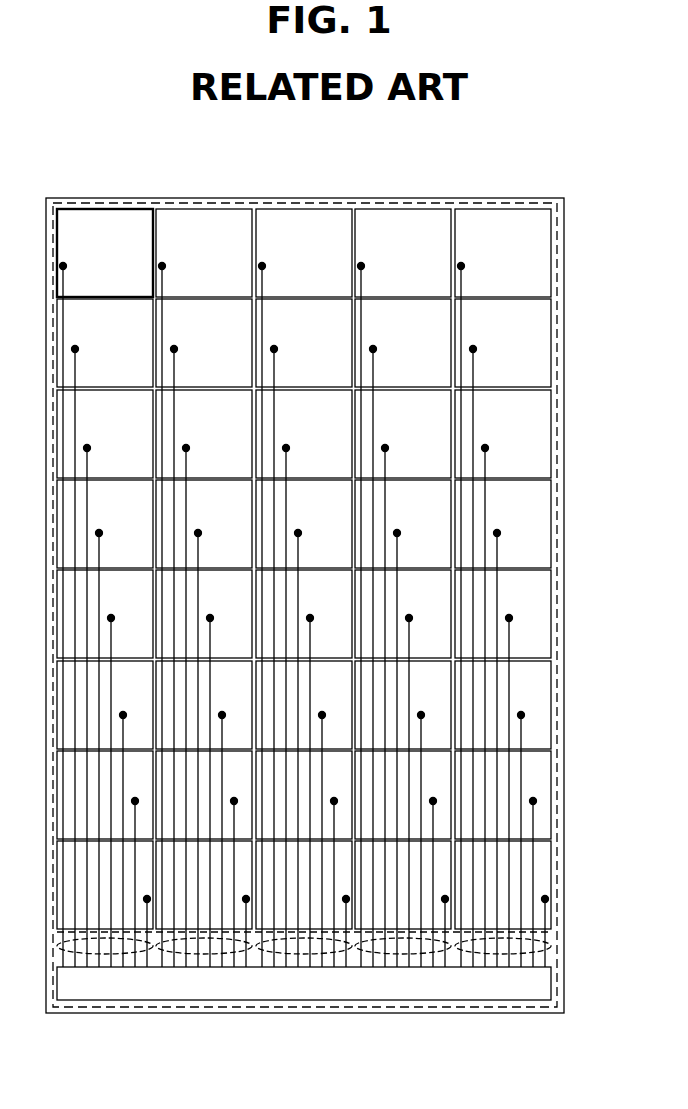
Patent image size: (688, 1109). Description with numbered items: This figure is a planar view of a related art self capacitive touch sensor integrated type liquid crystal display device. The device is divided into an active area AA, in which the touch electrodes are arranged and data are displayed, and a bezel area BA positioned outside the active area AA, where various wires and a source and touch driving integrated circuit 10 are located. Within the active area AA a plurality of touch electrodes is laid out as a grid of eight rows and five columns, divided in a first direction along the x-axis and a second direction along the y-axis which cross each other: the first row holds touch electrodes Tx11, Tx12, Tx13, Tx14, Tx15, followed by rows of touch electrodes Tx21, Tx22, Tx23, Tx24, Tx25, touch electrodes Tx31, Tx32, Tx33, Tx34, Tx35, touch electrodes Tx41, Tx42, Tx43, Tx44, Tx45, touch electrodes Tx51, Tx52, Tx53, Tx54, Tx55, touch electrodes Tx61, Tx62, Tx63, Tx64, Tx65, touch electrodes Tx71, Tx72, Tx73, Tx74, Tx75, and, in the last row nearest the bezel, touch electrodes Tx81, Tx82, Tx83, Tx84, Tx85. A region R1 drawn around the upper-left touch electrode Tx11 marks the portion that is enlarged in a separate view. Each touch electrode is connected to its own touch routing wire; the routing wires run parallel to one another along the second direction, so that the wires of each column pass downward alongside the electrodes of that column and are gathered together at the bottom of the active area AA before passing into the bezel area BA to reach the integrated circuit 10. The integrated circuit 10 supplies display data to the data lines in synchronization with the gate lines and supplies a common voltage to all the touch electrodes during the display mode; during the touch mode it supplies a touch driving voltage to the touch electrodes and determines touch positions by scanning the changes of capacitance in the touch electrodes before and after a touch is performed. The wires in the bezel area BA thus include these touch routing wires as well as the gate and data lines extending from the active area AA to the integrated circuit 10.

The region R1 is at (103, 209).
The active area AA is at (557, 850).
The bezel area BA is at (557, 951).
The source and touch driving integrated circuit 10 is at (304, 983).
The touch electrode Tx11 is at (105, 588).
The touch electrode Tx12 is at (204, 588).
The touch electrode Tx13 is at (304, 588).
The touch electrode Tx14 is at (403, 588).
The touch electrode Tx15 is at (503, 588).
The touch electrode Tx21 is at (105, 633).
The touch electrode Tx22 is at (204, 633).
The touch electrode Tx23 is at (304, 633).
The touch electrode Tx24 is at (403, 633).
The touch electrode Tx25 is at (503, 633).
The touch electrode Tx31 is at (105, 678).
The touch electrode Tx32 is at (204, 678).
The touch electrode Tx33 is at (304, 678).
The touch electrode Tx34 is at (403, 678).
The touch electrode Tx35 is at (503, 678).
The touch electrode Tx41 is at (105, 723).
The touch electrode Tx42 is at (204, 723).
The touch electrode Tx43 is at (304, 723).
The touch electrode Tx44 is at (403, 723).
The touch electrode Tx45 is at (503, 723).
The touch electrode Tx51 is at (105, 768).
The touch electrode Tx52 is at (204, 768).
The touch electrode Tx53 is at (304, 768).
The touch electrode Tx54 is at (403, 768).
The touch electrode Tx55 is at (503, 768).
The touch electrode Tx61 is at (105, 814).
The touch electrode Tx62 is at (204, 814).
The touch electrode Tx63 is at (304, 814).
The touch electrode Tx64 is at (403, 814).
The touch electrode Tx65 is at (503, 814).
The touch electrode Tx71 is at (105, 859).
The touch electrode Tx72 is at (204, 859).
The touch electrode Tx73 is at (304, 859).
The touch electrode Tx74 is at (403, 859).
The touch electrode Tx75 is at (503, 859).
The touch electrode Tx81 is at (105, 904).
The touch electrode Tx82 is at (204, 904).
The touch electrode Tx83 is at (304, 904).
The touch electrode Tx84 is at (403, 904).
The touch electrode Tx85 is at (503, 904).